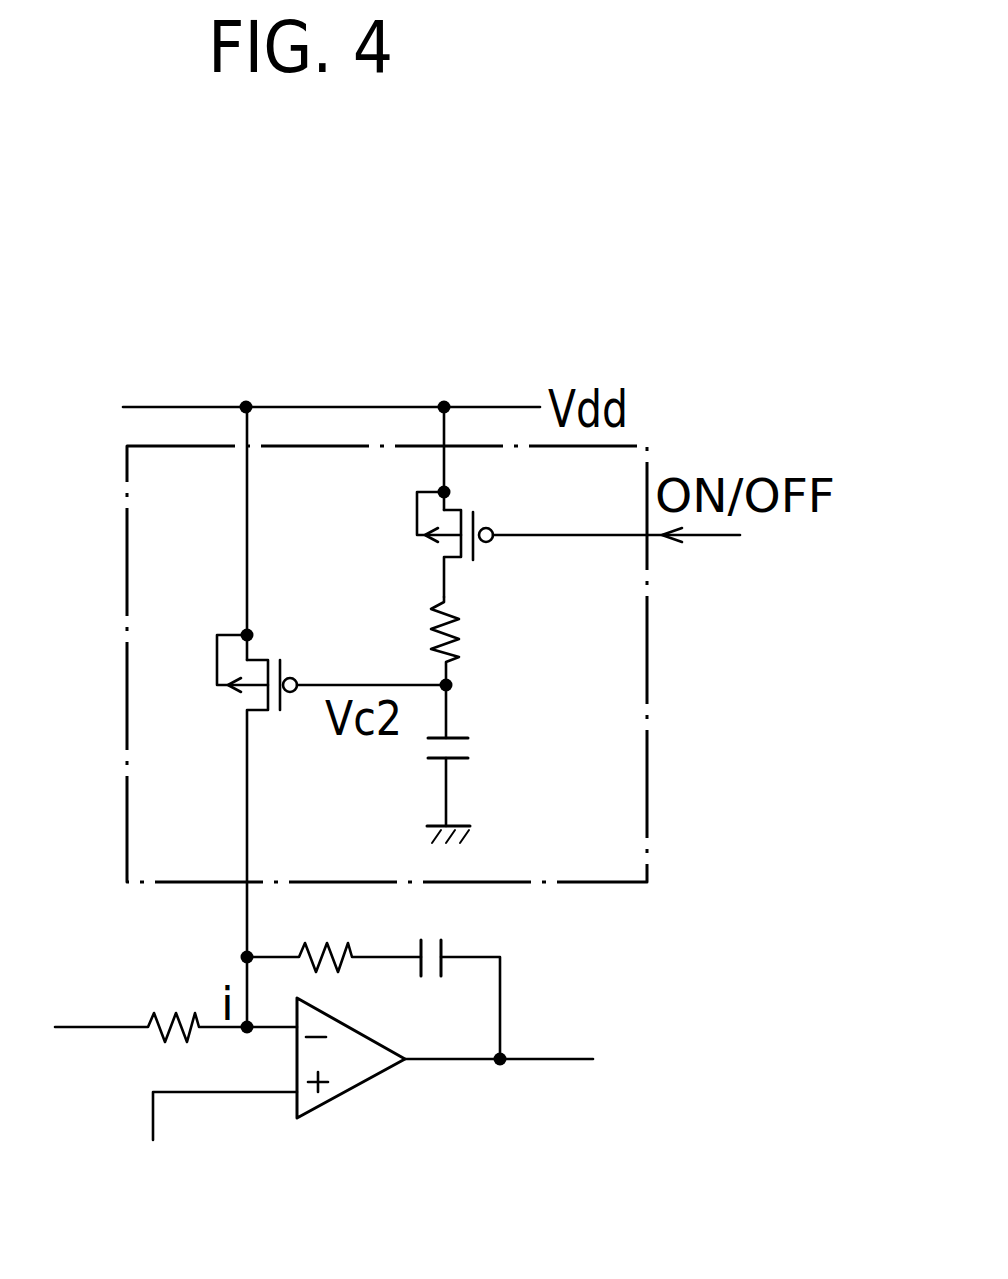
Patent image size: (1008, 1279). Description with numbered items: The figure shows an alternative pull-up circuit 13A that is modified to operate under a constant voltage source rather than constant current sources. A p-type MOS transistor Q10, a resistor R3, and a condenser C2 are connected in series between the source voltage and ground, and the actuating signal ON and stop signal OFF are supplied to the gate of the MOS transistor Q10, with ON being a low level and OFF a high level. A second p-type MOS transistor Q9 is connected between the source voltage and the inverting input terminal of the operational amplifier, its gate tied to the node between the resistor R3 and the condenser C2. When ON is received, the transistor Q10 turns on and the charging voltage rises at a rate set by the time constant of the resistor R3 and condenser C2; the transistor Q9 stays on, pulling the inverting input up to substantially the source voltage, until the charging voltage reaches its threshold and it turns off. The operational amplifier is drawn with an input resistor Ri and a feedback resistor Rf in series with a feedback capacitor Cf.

The pull-up circuit 13A is at (648, 728).
The p-type MOS transistor Q10 is at (578, 502).
The p-type MOS transistor Q9 is at (270, 682).
The resistor R3 is at (475, 641).
The condenser C2 is at (482, 764).
The feedback resistor Rf is at (334, 928).
The feedback capacitor Cf is at (452, 973).
The input resistor Ri is at (176, 1000).